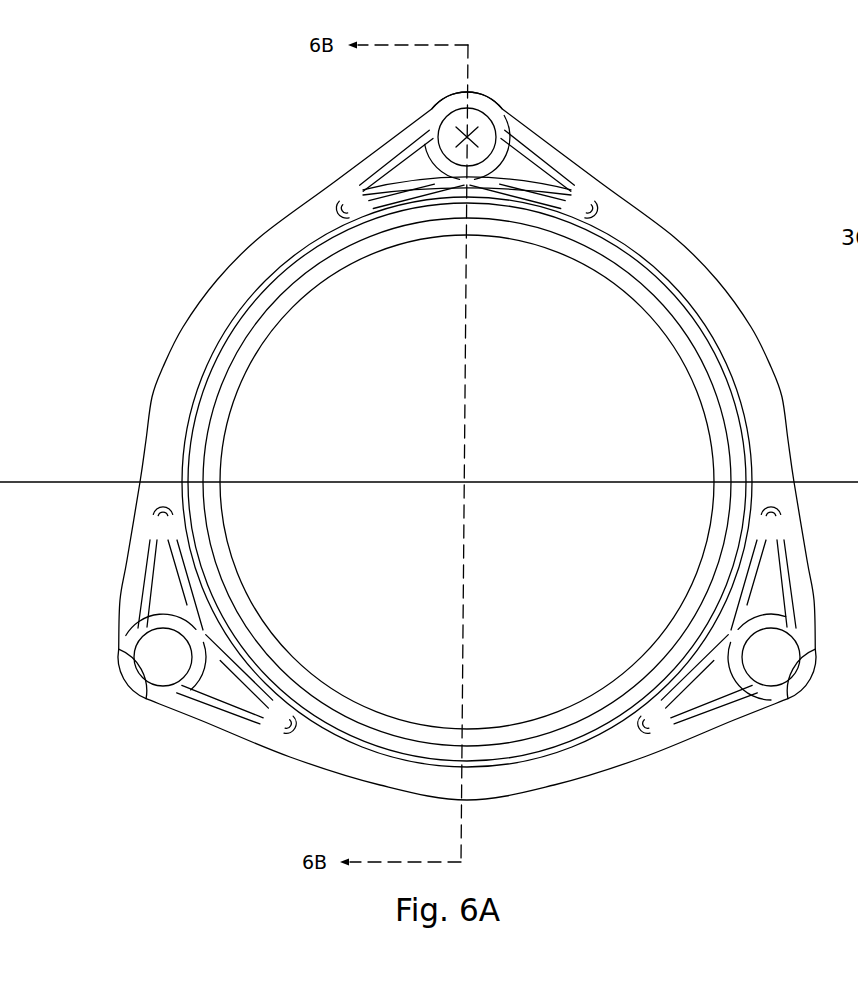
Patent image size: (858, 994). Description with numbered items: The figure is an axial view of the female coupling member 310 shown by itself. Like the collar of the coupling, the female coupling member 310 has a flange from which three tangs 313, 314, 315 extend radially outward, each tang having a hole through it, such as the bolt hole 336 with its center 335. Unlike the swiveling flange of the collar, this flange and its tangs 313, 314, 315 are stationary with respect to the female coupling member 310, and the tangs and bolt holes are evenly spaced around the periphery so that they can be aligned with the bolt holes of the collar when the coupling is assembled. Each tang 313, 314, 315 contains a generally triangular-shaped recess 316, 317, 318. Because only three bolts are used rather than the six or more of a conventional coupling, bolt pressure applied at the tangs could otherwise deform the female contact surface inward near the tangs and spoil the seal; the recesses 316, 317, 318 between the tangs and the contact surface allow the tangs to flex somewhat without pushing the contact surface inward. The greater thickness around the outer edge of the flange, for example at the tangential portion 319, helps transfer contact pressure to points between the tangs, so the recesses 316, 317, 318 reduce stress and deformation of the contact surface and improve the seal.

The female coupling member 310 is at (696, 190).
The tang 313 is at (538, 110).
The tang 314 is at (107, 585).
The tang 315 is at (735, 745).
The triangular-shaped recess 316 is at (417, 157).
The triangular-shaped recess 317 is at (193, 687).
The triangular-shaped recess 318 is at (770, 597).
The tangential portion 319 is at (547, 155).
The center 335 is at (472, 131).
The bolt hole 336 is at (443, 118).